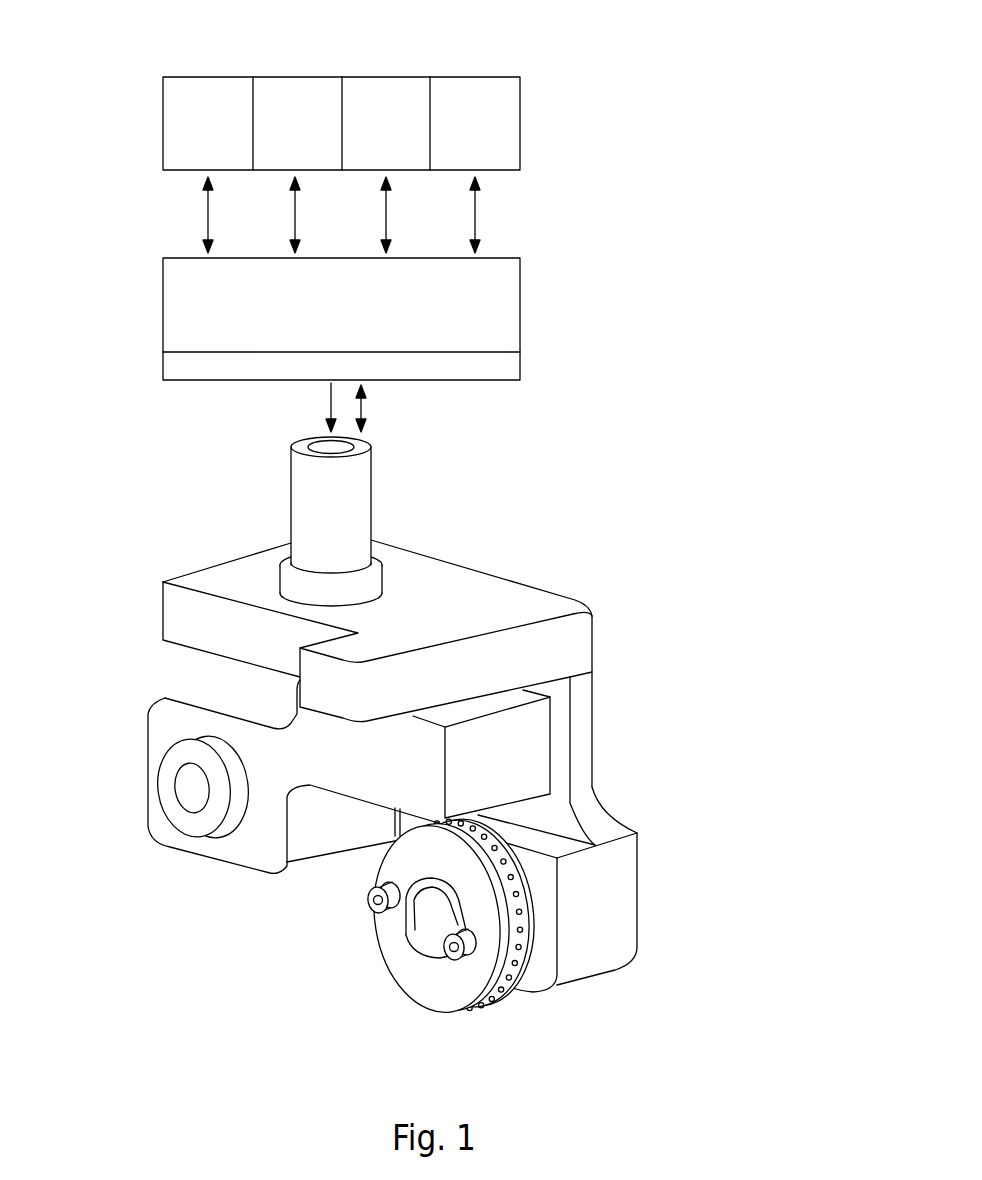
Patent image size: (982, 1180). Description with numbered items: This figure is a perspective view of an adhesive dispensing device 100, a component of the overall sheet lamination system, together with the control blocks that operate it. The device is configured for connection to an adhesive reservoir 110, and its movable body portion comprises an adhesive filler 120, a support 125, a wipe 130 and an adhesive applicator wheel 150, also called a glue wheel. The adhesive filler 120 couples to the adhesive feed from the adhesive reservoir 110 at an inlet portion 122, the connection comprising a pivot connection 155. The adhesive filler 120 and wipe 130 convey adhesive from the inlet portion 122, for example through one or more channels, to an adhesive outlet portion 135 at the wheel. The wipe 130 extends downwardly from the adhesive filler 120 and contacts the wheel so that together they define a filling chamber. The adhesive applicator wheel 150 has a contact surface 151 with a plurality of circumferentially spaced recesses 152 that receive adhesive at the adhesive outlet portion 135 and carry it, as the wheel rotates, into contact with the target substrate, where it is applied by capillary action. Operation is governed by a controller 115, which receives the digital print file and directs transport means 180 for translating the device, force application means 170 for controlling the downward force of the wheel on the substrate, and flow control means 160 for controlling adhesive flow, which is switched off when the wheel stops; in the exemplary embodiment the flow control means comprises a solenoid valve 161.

The adhesive dispensing device 100 is at (697, 242).
The adhesive reservoir 110 is at (493, 292).
The controller 115 is at (497, 122).
The adhesive filler 120 is at (577, 557).
The inlet portion 122 is at (357, 447).
The support 125 is at (592, 695).
The wipe 130 is at (412, 790).
The adhesive outlet portion 135 is at (545, 820).
The adhesive applicator wheel 150 is at (528, 945).
The contact surface 151 is at (566, 945).
The recesses 152 is at (520, 952).
The pivot connection 155 is at (398, 510).
The flow control means 160 is at (190, 130).
The solenoid valve 161 is at (182, 368).
The force application means 170 is at (282, 138).
The transport means 180 is at (377, 107).